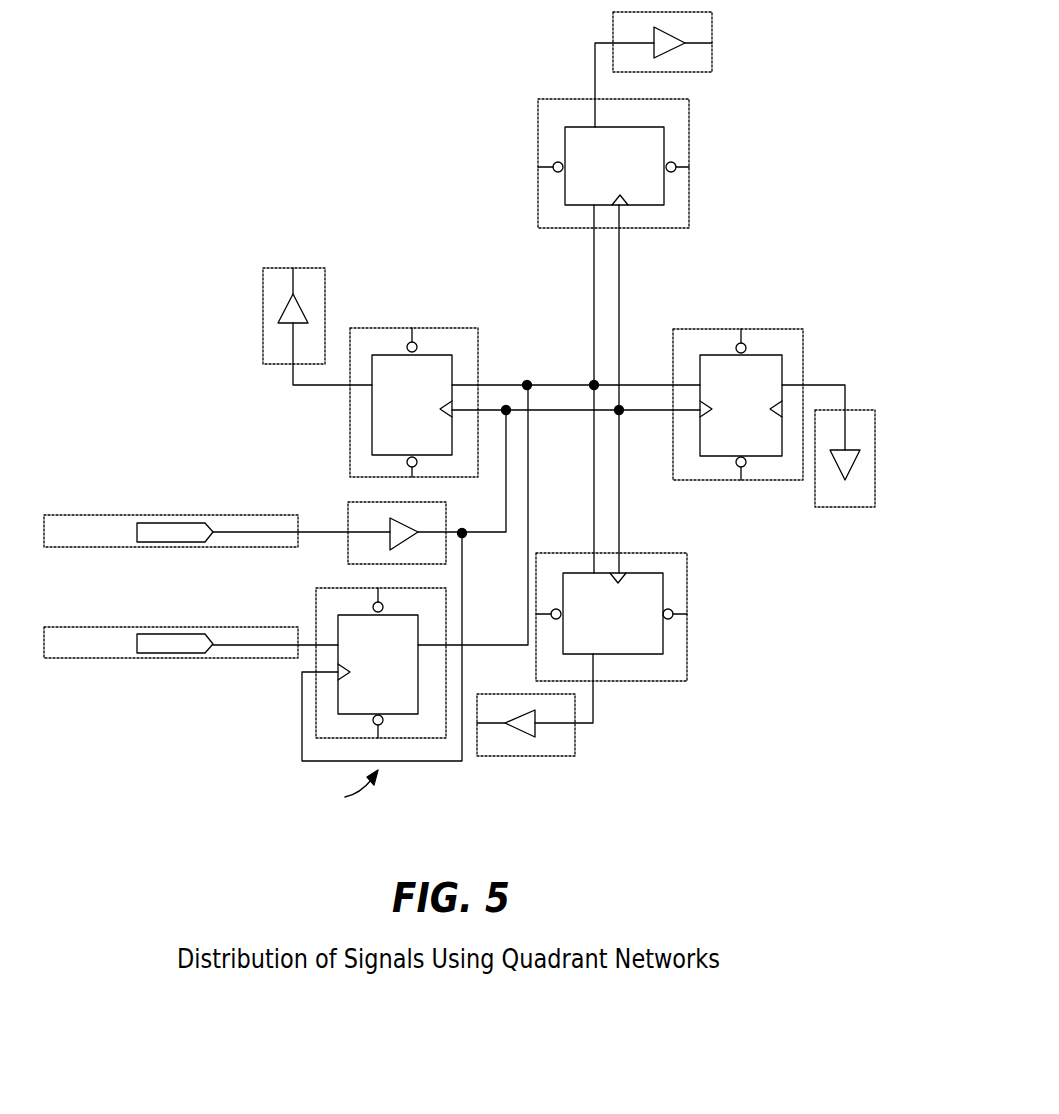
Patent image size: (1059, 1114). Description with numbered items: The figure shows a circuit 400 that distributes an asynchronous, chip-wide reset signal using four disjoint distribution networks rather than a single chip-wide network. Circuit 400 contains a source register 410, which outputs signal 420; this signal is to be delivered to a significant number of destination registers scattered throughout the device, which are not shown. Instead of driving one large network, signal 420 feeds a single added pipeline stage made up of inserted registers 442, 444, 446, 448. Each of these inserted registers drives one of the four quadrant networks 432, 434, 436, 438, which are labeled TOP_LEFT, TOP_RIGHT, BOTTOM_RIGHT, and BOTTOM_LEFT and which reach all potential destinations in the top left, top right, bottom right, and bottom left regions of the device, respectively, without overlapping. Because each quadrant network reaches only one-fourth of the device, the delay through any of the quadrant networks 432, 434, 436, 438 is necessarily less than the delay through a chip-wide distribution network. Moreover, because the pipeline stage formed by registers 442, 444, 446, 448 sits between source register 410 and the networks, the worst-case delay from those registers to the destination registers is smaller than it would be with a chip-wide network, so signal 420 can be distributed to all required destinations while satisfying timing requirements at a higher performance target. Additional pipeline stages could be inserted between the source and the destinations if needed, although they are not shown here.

The circuit 400 is at (247, 128).
The source register 410 is at (381, 663).
The signal 420 is at (492, 642).
The quadrant network 432 is at (314, 268).
The quadrant network 434 is at (712, 57).
The quadrant network 436 is at (862, 410).
The quadrant network 438 is at (545, 757).
The inserted register 442 is at (414, 402).
The inserted register 444 is at (613, 163).
The inserted register 446 is at (738, 404).
The inserted register 448 is at (611, 610).